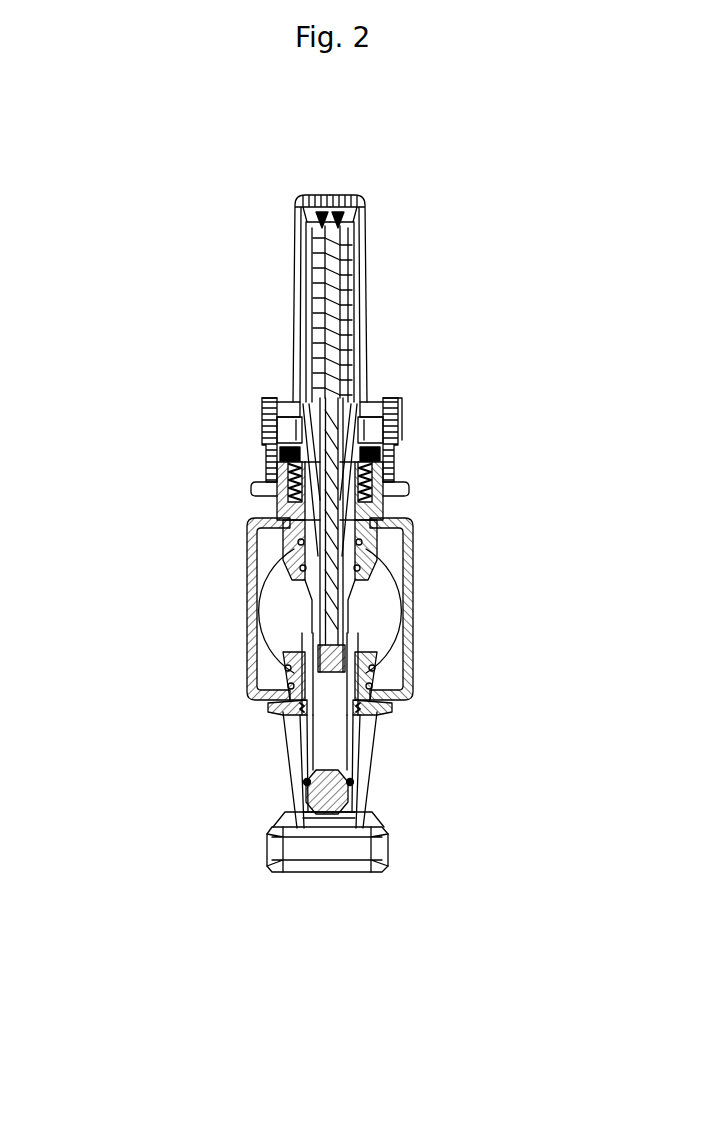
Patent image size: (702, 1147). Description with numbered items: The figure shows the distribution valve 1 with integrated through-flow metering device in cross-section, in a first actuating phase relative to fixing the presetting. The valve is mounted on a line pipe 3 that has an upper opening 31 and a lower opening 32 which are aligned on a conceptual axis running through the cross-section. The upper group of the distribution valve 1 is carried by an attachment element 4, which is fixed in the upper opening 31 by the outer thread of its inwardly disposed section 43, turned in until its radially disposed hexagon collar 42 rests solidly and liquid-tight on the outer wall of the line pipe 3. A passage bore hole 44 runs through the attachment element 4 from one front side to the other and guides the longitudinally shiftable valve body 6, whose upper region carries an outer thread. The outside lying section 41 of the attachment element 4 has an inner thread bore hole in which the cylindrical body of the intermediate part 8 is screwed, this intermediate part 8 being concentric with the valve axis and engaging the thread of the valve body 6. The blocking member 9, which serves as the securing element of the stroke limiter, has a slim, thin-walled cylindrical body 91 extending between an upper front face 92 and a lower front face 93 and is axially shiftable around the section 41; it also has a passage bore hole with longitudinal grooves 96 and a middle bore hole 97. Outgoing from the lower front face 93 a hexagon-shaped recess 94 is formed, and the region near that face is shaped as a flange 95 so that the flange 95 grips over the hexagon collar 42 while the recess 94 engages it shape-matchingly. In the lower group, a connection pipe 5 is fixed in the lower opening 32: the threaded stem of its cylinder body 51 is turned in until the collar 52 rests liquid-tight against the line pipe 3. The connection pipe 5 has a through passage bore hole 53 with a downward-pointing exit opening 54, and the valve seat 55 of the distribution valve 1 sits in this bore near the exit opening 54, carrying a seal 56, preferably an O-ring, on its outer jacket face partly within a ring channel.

The distribution valve 1 is at (410, 214).
The line pipe 3 is at (415, 653).
The attachment element 4 is at (255, 513).
The connection pipe 5 is at (405, 750).
The valve body 6 is at (268, 386).
The intermediate part 8 is at (400, 433).
The blocking member 9 is at (410, 450).
The upper opening 31 is at (288, 540).
The lower opening 32 is at (290, 680).
The outside lying section 41 is at (272, 502).
The hexagon collar 42 is at (397, 518).
The inwardly disposed section 43 is at (372, 565).
The passage bore hole 44 is at (282, 510).
The cylinder body 51 is at (372, 777).
The collar 52 is at (404, 703).
The through passage bore hole 53 is at (333, 720).
The exit opening 54 is at (348, 876).
The valve seat 55 is at (322, 808).
The seal 56 is at (307, 784).
The cylindrical body 91 is at (400, 418).
The upper front face 92 is at (400, 390).
The lower front face 93 is at (398, 497).
The recess 94 is at (262, 500).
The flange 95 is at (402, 492).
The passage bore hole with longitudinal grooves 96 is at (260, 432).
The middle bore hole 97 is at (257, 455).